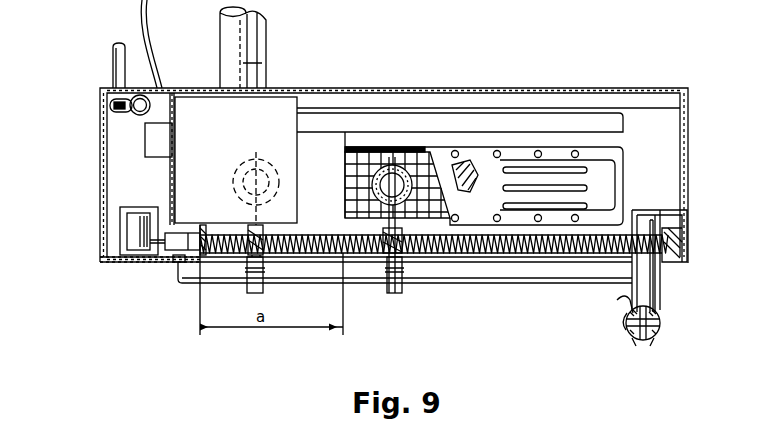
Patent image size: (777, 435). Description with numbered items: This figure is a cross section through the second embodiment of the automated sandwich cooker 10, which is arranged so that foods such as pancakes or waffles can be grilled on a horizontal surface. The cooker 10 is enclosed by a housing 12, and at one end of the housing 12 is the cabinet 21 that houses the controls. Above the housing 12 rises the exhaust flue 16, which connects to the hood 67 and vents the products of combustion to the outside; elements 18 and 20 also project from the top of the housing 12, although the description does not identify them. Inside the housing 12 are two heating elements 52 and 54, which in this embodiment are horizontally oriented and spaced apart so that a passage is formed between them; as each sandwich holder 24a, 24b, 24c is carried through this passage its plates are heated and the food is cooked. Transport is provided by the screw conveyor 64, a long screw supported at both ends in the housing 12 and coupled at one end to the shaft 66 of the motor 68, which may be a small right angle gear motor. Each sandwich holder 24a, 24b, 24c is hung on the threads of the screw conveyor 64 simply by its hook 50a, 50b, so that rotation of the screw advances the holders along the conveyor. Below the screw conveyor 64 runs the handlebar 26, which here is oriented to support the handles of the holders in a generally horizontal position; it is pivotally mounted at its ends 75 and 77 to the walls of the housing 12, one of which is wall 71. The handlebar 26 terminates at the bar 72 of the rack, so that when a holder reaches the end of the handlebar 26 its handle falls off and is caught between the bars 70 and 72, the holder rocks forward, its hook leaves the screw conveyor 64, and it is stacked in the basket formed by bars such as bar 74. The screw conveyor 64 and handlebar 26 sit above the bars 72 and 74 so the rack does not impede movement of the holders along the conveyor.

The automated sandwich cooker 10 is at (395, 80).
The housing 12 is at (100, 145).
The exhaust flue 16 is at (262, 63).
The power cable 18 is at (157, 50).
The vent pipe 20 is at (113, 70).
The cabinet 21 is at (142, 189).
The sandwich holder 24a is at (266, 289).
The sandwich holder 24b is at (392, 296).
The sandwich holder 24c is at (643, 343).
The handlebar 26 is at (560, 290).
The hook 50a is at (270, 228).
The hook 50b is at (406, 240).
The heating element 52 is at (430, 206).
The heating element 54 is at (489, 172).
The screw conveyor 64 is at (488, 253).
The shaft 66 is at (181, 233).
The hood 67 is at (235, 133).
The motor 68 is at (136, 237).
The bar 70 is at (660, 272).
The housing wall 71 is at (623, 186).
The bar 72 is at (617, 300).
The bar 74 is at (627, 313).
The end of handlebar 75 is at (170, 271).
The end of handlebar 77 is at (688, 217).